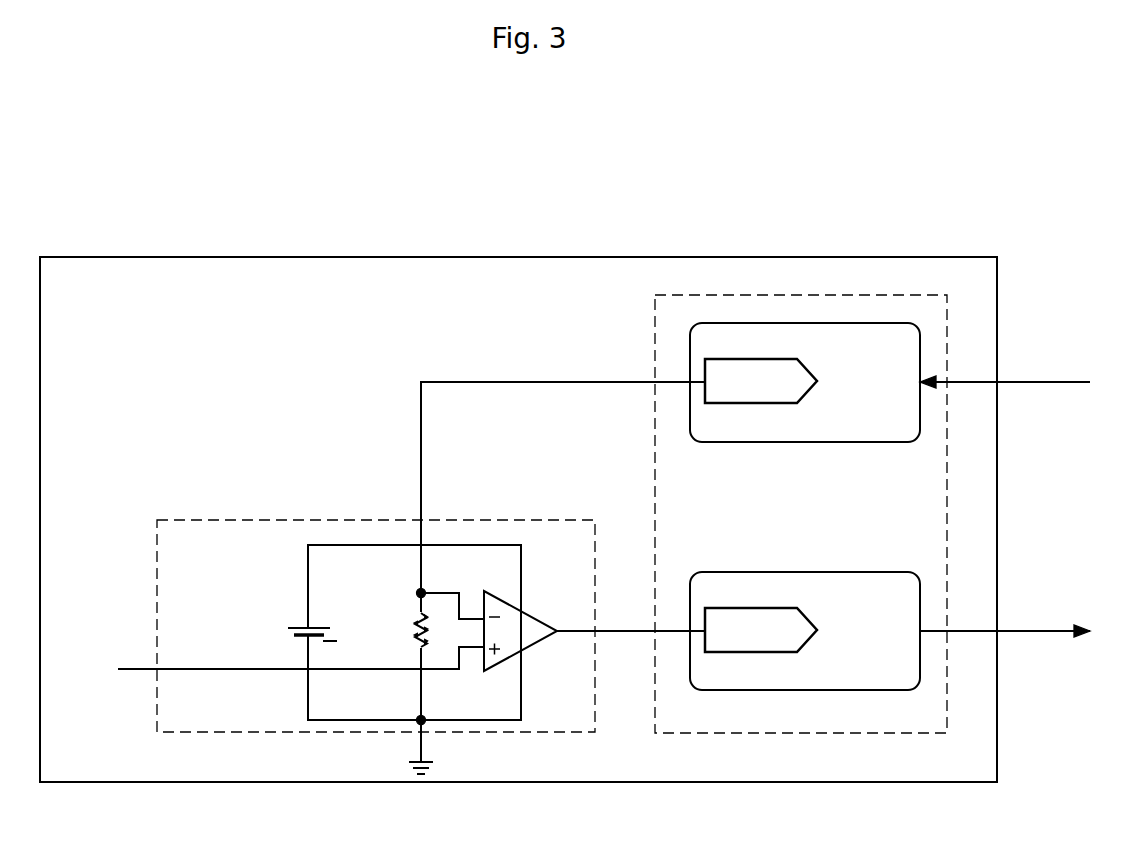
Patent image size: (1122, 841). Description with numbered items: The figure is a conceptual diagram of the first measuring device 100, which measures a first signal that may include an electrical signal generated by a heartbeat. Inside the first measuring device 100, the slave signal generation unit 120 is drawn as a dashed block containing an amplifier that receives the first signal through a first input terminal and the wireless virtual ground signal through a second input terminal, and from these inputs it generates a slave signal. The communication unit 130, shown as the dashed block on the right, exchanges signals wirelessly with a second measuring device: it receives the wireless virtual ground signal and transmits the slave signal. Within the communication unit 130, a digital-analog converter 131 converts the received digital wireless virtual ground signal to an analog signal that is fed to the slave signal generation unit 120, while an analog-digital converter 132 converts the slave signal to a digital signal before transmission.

The first measuring device 100 is at (157, 257).
The slave signal generation unit 120 is at (193, 520).
The communication unit 130 is at (872, 295).
The digital-analog converter 131 is at (719, 403).
The analog-digital converter 132 is at (778, 608).